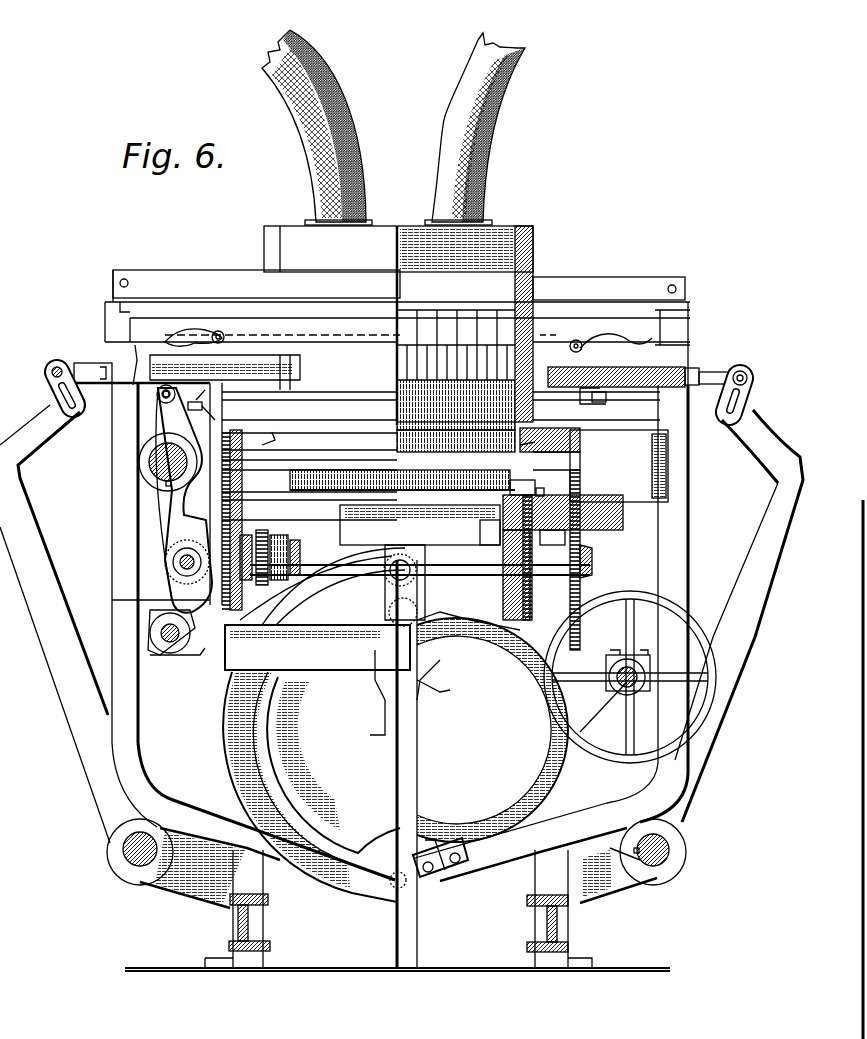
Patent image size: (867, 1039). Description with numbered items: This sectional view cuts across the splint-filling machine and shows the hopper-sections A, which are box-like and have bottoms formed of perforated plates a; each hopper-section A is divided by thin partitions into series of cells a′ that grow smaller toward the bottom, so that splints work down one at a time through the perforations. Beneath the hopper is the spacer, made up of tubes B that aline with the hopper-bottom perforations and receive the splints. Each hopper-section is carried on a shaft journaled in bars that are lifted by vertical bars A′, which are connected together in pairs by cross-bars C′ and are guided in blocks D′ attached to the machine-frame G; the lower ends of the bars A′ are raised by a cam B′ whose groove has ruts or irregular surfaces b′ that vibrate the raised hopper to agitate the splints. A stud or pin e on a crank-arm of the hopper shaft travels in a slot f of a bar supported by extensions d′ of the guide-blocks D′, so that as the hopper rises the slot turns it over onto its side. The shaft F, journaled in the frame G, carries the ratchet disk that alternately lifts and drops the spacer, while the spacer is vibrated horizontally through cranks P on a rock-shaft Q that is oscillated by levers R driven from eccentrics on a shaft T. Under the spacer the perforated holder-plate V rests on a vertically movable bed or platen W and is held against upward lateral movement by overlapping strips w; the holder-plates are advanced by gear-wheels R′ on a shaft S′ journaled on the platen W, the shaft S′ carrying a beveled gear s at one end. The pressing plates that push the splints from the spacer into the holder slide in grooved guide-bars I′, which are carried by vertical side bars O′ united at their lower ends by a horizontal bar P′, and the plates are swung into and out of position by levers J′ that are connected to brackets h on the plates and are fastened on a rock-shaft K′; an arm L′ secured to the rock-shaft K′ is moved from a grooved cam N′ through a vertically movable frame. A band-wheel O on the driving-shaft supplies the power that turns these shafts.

The hopper-section A is at (552, 253).
The compartments or cells a′ is at (398, 325).
The slot f is at (180, 346).
The horizontal shaft F is at (322, 333).
The stud or pin e is at (224, 337).
The bracket h is at (80, 362).
The lever J′ is at (55, 676).
The vertical bar A′ is at (118, 515).
The arm L′ is at (196, 818).
The rock-shaft K′ is at (135, 860).
The machine-frame G is at (240, 930).
The crank P is at (140, 438).
The rock-shaft Q is at (148, 464).
The guide-bar I′ is at (182, 400).
The vertical side bar O′ is at (212, 518).
The lever R is at (156, 494).
The shaft S′ is at (166, 624).
The shaft T is at (166, 660).
The bed or platen W is at (400, 505).
The perforated plate a is at (397, 414).
The tube B is at (397, 440).
The cross-bar C′ is at (408, 458).
The extension d′ is at (275, 445).
The perforated plate V is at (519, 482).
The strip w is at (544, 480).
The guide-block D′ is at (600, 466).
The gear-wheel R′ is at (283, 535).
The beveled gear s is at (593, 556).
The horizontal bar P′ is at (317, 647).
The cam B′ is at (395, 757).
The ruts or irregular surfaces b′ is at (434, 692).
The band-wheel O is at (700, 628).
The cam N′ is at (632, 666).